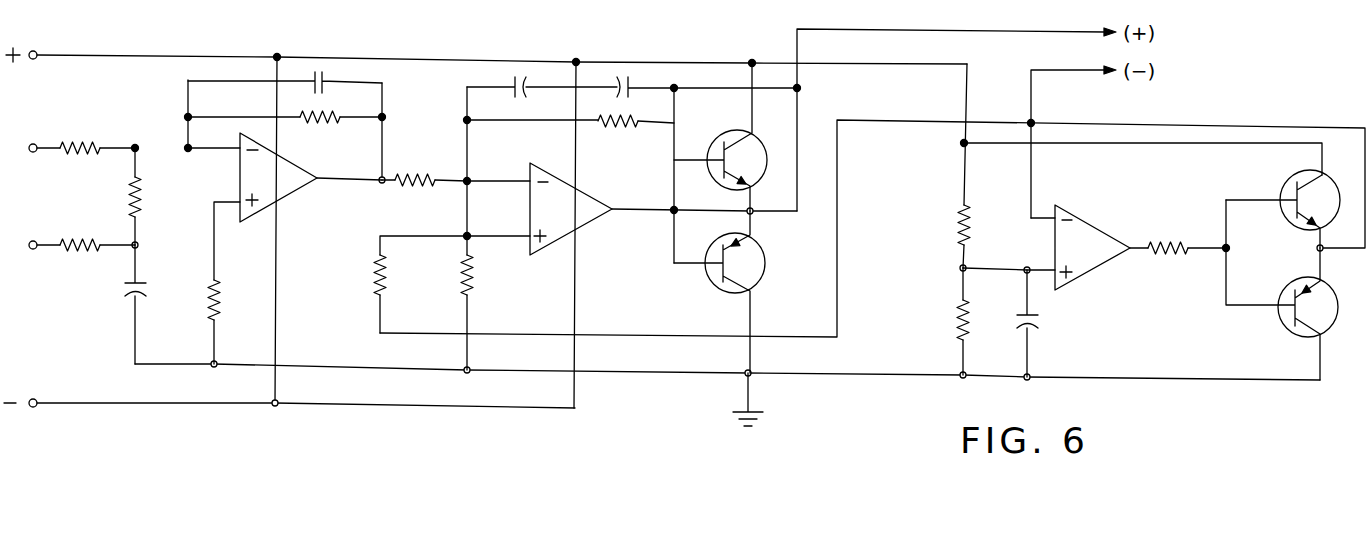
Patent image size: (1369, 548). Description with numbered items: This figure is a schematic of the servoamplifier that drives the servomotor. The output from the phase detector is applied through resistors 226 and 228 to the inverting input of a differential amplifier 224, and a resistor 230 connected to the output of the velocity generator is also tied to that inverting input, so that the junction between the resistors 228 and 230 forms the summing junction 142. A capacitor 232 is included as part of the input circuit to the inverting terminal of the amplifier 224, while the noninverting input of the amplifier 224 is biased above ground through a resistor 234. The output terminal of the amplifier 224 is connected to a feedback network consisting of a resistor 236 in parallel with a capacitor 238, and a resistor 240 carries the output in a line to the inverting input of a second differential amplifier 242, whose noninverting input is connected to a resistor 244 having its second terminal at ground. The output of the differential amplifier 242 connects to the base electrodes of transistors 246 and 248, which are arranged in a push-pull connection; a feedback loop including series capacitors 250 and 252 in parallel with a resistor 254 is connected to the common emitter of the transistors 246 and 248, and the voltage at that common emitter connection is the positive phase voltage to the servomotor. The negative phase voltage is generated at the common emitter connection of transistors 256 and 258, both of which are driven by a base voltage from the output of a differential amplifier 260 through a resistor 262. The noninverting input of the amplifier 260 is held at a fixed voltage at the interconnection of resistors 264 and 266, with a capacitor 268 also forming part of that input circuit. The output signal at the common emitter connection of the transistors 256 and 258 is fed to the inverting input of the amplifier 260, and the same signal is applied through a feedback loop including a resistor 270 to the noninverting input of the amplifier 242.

The summing junction 142 is at (135, 145).
The differential amplifier 224 is at (280, 186).
The resistor 226 is at (78, 241).
The resistor 228 is at (141, 184).
The resistor 230 is at (77, 142).
The capacitor 232 is at (122, 291).
The resistor 234 is at (218, 295).
The resistor 236 is at (321, 123).
The capacitor 238 is at (332, 75).
The resistor 240 is at (411, 176).
The differential amplifier 242 is at (571, 216).
The resistor 244 is at (463, 278).
The transistor 246 is at (718, 142).
The transistor 248 is at (706, 281).
The capacitor 250 is at (512, 80).
The capacitor 252 is at (620, 76).
The resistor 254 is at (620, 126).
The transistor 256 is at (1286, 182).
The transistor 258 is at (1300, 280).
The differential amplifier 260 is at (1099, 254).
The resistor 262 is at (1158, 243).
The resistor 264 is at (959, 230).
The resistor 266 is at (958, 327).
The capacitor 268 is at (1040, 320).
The resistor 270 is at (377, 262).